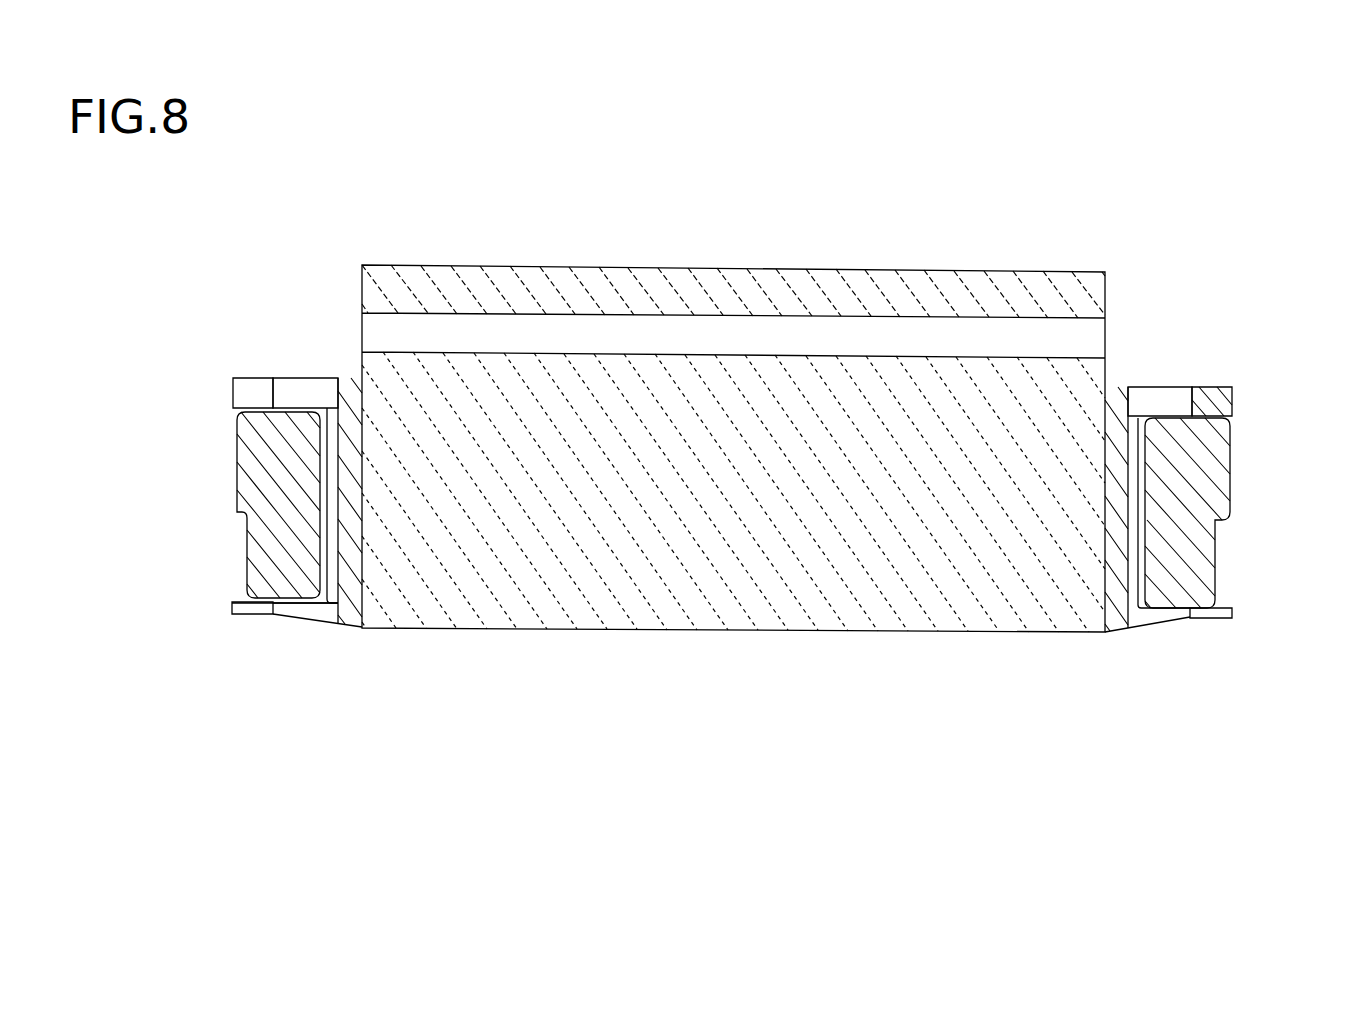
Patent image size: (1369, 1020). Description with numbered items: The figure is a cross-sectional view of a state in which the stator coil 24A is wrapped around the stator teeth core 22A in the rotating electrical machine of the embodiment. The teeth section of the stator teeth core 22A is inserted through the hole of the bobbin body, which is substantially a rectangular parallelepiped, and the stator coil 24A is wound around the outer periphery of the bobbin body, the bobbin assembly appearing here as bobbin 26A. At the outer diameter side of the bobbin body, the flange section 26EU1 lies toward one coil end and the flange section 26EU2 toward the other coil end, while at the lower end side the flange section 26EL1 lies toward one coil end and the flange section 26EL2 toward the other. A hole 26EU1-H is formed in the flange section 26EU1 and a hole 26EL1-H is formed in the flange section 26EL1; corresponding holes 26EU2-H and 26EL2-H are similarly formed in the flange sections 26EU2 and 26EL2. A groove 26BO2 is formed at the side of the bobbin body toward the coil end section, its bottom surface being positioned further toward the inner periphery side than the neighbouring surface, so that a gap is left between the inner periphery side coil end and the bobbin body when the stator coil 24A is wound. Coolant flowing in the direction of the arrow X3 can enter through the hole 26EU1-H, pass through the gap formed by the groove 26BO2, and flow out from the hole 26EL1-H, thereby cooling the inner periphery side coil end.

The stator teeth core 22A is at (678, 580).
The stator coil 24A is at (280, 522).
The bracket 26A is at (286, 508).
The flange section 26EU1 is at (252, 385).
The hole 26EU1-H is at (297, 392).
The flange section 26EU2 is at (1215, 397).
The upper end flange 2 hole 26EU2-H is at (1147, 403).
The flange section 26EL1 is at (250, 608).
The hole 26EL1-H is at (307, 612).
The flange section 26EL2 is at (1198, 612).
The lower end flange 2 hole 26EL2-H is at (1160, 625).
The groove 26BO2 is at (333, 522).
The arrow X3 is at (333, 356).